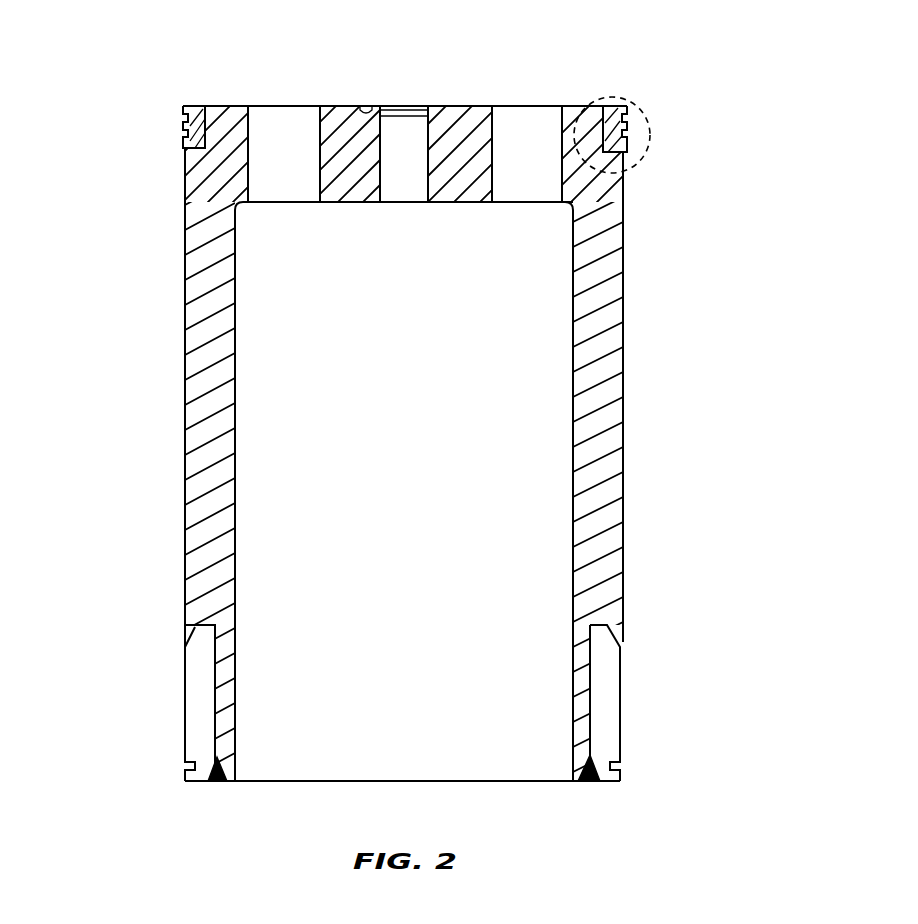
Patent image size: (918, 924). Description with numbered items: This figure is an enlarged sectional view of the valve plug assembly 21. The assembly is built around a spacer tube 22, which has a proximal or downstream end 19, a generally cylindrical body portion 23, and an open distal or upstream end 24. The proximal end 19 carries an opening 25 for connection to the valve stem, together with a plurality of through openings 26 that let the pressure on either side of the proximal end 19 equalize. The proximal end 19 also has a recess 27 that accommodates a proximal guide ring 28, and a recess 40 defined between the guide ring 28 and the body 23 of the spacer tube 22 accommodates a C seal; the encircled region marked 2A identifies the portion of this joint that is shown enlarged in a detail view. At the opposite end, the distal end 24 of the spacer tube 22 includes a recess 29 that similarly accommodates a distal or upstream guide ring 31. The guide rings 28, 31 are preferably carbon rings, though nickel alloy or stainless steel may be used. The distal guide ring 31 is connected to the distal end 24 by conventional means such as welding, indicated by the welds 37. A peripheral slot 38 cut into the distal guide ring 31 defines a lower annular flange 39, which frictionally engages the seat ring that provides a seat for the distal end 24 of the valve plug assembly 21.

The detail region of flange 2A is at (648, 121).
The proximal end 19 is at (455, 106).
The valve plug assembly 21 is at (660, 322).
The spacer tube 22 is at (623, 473).
The body portion 23 is at (588, 425).
The distal end 24 is at (577, 708).
The opening 25 is at (428, 135).
The through openings 26 is at (318, 137).
The recess 27 is at (196, 108).
The proximal guide ring 28 is at (180, 147).
The recess 29 is at (215, 690).
The distal guide ring 31 is at (180, 737).
The welds 37 is at (214, 783).
The peripheral slot 38 is at (622, 764).
The lower annular flange 39 is at (184, 772).
The recess 40 is at (186, 153).